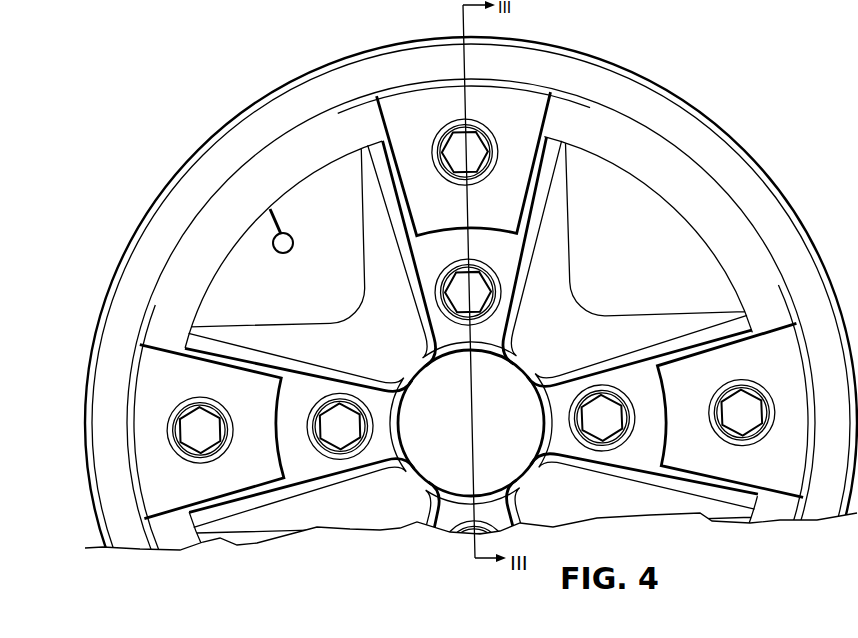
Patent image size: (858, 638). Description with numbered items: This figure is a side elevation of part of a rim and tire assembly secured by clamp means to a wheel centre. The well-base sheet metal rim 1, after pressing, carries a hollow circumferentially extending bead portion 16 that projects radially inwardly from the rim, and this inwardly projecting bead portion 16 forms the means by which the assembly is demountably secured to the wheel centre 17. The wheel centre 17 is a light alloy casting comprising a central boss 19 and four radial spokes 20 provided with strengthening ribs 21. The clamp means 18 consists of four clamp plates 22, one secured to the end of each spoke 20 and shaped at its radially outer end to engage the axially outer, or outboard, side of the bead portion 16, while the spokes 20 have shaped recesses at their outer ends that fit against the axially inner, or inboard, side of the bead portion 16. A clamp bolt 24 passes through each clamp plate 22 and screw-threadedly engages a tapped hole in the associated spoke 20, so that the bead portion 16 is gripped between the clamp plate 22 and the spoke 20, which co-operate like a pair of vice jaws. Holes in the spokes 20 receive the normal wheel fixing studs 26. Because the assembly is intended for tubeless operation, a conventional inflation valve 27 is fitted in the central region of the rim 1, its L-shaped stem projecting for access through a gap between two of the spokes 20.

The rim 1 is at (182, 164).
The bead portion 16 is at (201, 237).
The wheel centre 17 is at (237, 323).
The clamp means 18 is at (428, 100).
The central boss 19 is at (414, 366).
The radial spokes 20 is at (370, 174).
The strengthening ribs 21 is at (385, 200).
The clamp plates 22 is at (388, 110).
The clamp bolt 24 is at (176, 448).
The wheel fixing studs 26 is at (356, 462).
The inflation valve 27 is at (260, 249).